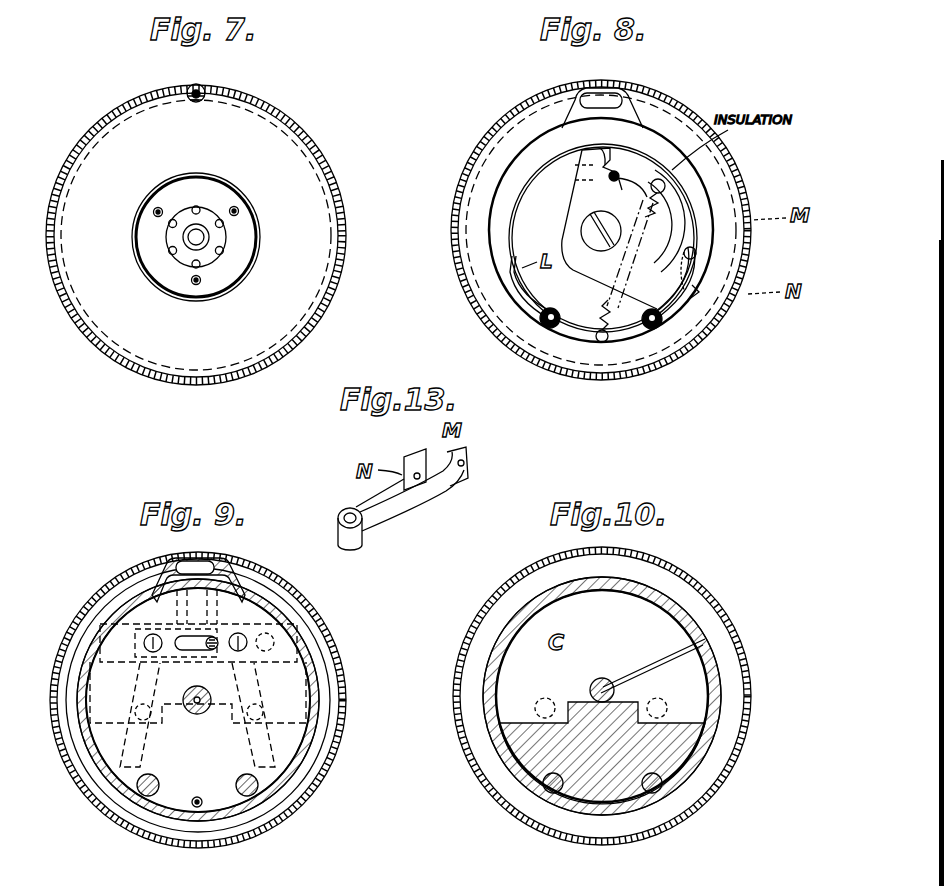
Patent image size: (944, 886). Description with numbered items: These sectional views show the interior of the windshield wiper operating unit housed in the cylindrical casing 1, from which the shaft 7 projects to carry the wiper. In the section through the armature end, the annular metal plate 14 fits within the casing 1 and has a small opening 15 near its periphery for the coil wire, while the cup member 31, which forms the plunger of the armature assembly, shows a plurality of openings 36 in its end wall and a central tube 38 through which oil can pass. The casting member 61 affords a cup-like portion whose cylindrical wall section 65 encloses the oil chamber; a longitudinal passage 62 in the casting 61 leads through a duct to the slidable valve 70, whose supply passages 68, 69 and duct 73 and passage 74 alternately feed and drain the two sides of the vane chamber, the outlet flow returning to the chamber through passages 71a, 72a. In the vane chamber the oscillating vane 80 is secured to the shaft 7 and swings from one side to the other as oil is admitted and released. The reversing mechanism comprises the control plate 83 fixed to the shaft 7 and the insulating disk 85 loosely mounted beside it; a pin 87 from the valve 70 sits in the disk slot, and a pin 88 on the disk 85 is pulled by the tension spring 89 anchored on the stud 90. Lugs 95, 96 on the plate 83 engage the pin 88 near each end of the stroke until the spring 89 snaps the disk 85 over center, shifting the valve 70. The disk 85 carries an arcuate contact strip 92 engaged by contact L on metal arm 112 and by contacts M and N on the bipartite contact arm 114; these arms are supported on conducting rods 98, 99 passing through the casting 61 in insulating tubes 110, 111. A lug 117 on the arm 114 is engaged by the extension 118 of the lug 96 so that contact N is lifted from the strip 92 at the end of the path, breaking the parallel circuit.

In FIG. 7, the casing 1 is at (332, 292).
In FIG. 8, the casing 1 is at (464, 292).
In FIG. 9, the casing 1 is at (300, 592).
In FIG. 10, the casing 1 is at (706, 597).
In FIG. 9, the shaft 7 is at (197, 715).
In FIG. 10, the shaft 7 is at (596, 686).
In FIG. 7, the annular metal plate 14 is at (124, 126).
In FIG. 9, the annular metal plate 14 is at (205, 530).
In FIG. 7, the small opening 15 is at (203, 86).
In FIG. 9, the small opening 15 is at (185, 530).
In FIG. 7, the cup member 31 is at (205, 211).
In FIG. 7, the openings 36 is at (170, 243).
In FIG. 7, the tube 38 is at (212, 239).
In FIG. 8, the casting member 61 is at (533, 138).
In FIG. 9, the casting member 61 is at (90, 762).
In FIG. 10, the casting member 61 is at (736, 683).
In FIG. 8, the longitudinal passage 62 is at (608, 96).
In FIG. 9, the longitudinal passage 62 is at (226, 570).
In FIG. 8, the cylindrical wall section 65 is at (506, 162).
In FIG. 9, the cylindrical wall section 65 is at (86, 694).
In FIG. 9, the supply passage 68 is at (188, 696).
In FIG. 9, the supply passage 69 is at (268, 656).
In FIG. 9, the slidable valve 70 is at (150, 640).
In FIG. 9, the passage 71a is at (150, 650).
In FIG. 9, the passage 72a is at (238, 634).
In FIG. 9, the duct 73 is at (264, 700).
In FIG. 9, the passage 74 is at (142, 692).
In FIG. 10, the oscillating vane 80 is at (660, 673).
In FIG. 8, the control plate 83 is at (578, 207).
In FIG. 8, the insulating disk 85 is at (683, 220).
In FIG. 8, the pin 87 is at (623, 173).
In FIG. 9, the pin 87 is at (214, 651).
In FIG. 8, the pin 88 is at (665, 182).
In FIG. 8, the tension spring 89 is at (607, 303).
In FIG. 8, the stud 90 is at (602, 343).
In FIG. 9, the stud 90 is at (203, 790).
In FIG. 8, the arcuate contact strip 92 is at (528, 178).
In FIG. 8, the lug 95 is at (613, 166).
In FIG. 8, the lug 96 is at (633, 254).
In FIG. 8, the conducting rod 98 is at (548, 329).
In FIG. 9, the conducting rod 98 is at (155, 779).
In FIG. 10, the conducting rod 98 is at (548, 793).
In FIG. 8, the conducting rod 99 is at (656, 330).
In FIG. 9, the conducting rod 99 is at (242, 779).
In FIG. 10, the conducting rod 99 is at (655, 795).
In FIG. 8, the insulating tube 110 is at (560, 331).
In FIG. 9, the insulating tube 110 is at (152, 796).
In FIG. 10, the insulating tube 110 is at (548, 787).
In FIG. 8, the insulating tube 111 is at (661, 326).
In FIG. 9, the insulating tube 111 is at (243, 796).
In FIG. 10, the insulating tube 111 is at (661, 785).
In FIG. 8, the metal arm 112 is at (526, 301).
In FIG. 8, the contact arm 114 is at (692, 320).
In FIG. 13, the contact arm 114 is at (434, 519).
In FIG. 8, the lug 117 is at (694, 294).
In FIG. 13, the lug 117 is at (408, 456).
In FIG. 8, the extension 118 is at (697, 258).